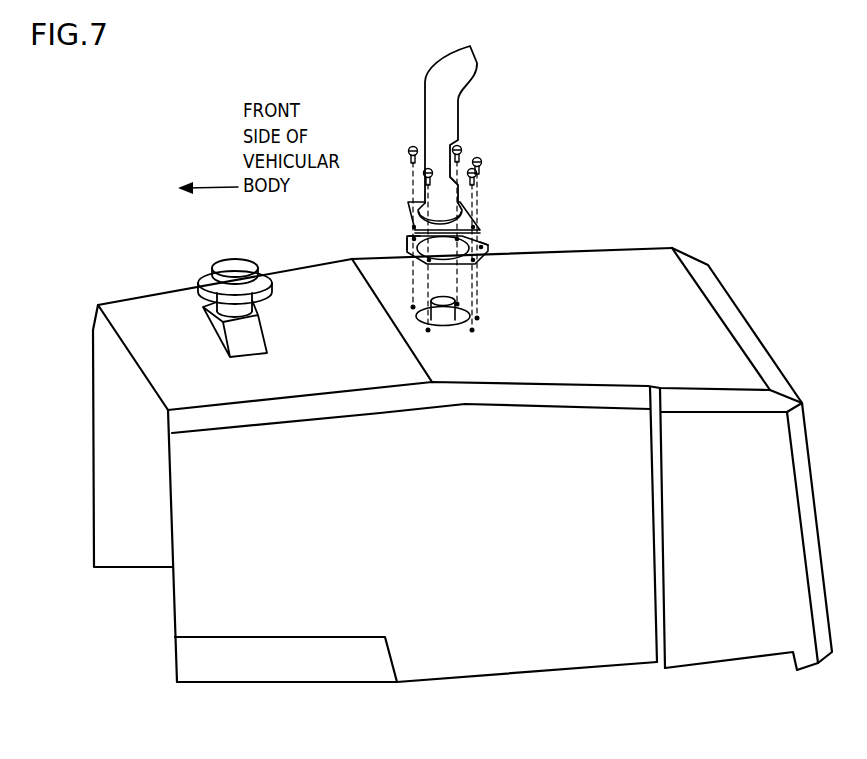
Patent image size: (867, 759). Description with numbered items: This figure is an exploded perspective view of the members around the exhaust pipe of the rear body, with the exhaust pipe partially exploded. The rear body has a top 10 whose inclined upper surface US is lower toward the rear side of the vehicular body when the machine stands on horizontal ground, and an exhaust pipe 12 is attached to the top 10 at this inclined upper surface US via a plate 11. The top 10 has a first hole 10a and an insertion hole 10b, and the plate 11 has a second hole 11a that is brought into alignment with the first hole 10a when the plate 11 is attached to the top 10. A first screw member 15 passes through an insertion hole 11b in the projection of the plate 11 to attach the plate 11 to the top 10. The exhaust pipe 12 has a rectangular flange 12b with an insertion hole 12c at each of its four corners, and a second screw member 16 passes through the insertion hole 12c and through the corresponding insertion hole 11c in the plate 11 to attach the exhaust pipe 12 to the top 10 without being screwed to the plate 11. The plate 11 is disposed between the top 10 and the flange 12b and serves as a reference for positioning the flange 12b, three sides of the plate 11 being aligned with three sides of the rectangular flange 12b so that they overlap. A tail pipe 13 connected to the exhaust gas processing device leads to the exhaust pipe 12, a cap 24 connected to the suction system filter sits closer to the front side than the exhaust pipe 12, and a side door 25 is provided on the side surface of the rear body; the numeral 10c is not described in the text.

The top 10 is at (462, 441).
The first hole 10a is at (374, 277).
The insertion hole 10b is at (513, 248).
The bolt holes 10c is at (376, 268).
The plate 11 is at (468, 232).
The second hole 11a is at (379, 243).
The insertion hole 11b is at (500, 209).
The insertion hole 11c is at (383, 223).
The exhaust pipe 12 is at (431, 124).
The flange 12b is at (406, 204).
The insertion hole 12c is at (415, 198).
The tail pipe 13 is at (516, 267).
The first screw member 15 is at (494, 166).
The second screw member 16 is at (395, 162).
The cap 24 is at (235, 284).
The side door 25 is at (416, 654).
The inclined upper surface US is at (512, 244).